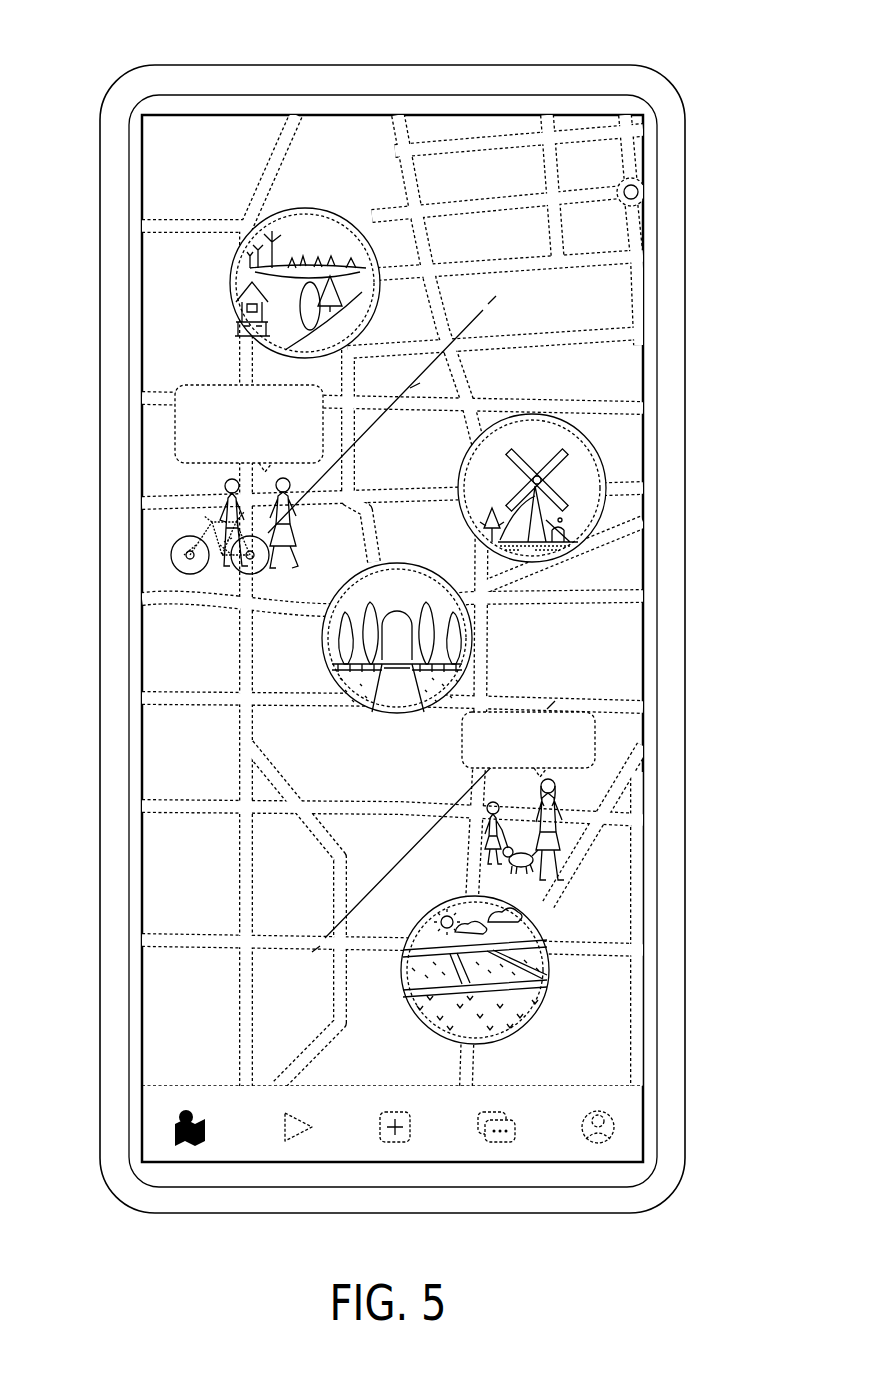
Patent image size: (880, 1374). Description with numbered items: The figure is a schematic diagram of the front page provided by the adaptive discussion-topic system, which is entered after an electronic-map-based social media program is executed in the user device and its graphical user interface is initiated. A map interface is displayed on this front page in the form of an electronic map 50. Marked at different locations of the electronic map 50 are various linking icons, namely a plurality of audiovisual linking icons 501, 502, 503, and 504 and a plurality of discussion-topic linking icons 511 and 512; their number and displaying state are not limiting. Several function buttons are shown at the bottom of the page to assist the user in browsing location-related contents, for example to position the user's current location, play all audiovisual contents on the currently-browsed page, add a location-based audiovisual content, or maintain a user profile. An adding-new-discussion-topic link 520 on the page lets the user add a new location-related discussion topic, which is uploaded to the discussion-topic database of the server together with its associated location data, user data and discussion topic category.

The electronic map 50 is at (360, 122).
The audiovisual linking icon 501 is at (232, 284).
The audiovisual linking icon 502 is at (606, 463).
The audiovisual linking icon 503 is at (397, 714).
The audiovisual linking icon 504 is at (546, 1002).
The discussion-topic linking icon 511 is at (166, 427).
The discussion-topic linking icon 512 is at (606, 742).
The adding-new-discussion-topic link 520 is at (500, 1143).